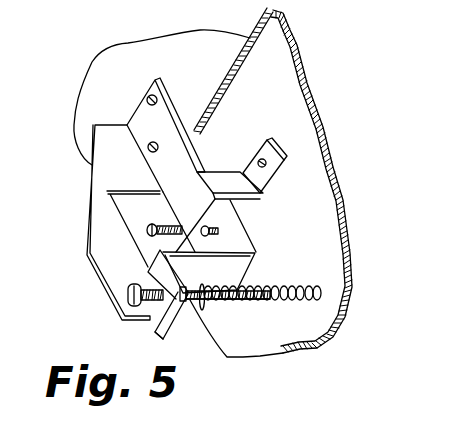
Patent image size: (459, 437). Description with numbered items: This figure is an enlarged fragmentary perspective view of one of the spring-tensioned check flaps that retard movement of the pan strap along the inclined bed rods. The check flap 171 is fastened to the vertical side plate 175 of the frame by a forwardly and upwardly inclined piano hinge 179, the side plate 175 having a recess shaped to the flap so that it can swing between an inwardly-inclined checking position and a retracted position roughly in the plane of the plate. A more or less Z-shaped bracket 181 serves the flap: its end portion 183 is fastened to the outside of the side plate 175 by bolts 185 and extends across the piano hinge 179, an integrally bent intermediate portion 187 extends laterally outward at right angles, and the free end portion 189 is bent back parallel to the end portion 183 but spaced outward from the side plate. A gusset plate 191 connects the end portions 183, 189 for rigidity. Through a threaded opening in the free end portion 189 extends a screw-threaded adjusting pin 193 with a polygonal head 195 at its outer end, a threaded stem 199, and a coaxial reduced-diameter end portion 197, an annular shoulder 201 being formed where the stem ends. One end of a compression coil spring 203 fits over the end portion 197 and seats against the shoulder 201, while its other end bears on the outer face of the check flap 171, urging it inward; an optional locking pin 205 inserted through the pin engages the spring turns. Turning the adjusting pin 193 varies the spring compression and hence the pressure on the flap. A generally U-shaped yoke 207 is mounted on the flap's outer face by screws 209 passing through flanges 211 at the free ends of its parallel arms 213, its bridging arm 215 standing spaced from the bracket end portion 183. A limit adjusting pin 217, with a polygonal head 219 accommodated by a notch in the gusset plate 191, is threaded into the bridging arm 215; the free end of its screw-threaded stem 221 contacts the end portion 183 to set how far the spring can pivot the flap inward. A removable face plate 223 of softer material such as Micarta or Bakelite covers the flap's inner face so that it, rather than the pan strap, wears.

The check flap 171 is at (403, 265).
The side plate 175 is at (128, 47).
The piano hinge 179 is at (246, 46).
The Z-shaped bracket 181 is at (140, 268).
The end portion 183 is at (168, 117).
The bolts 185 is at (152, 146).
The intermediate portion 187 is at (232, 253).
The free end portion 189 is at (155, 333).
The gusset plate 191 is at (100, 198).
The adjusting pin 193 is at (222, 280).
The polygonal head 195 is at (123, 297).
The reduced-diameter end portion 197 is at (268, 301).
The threaded stem 199 is at (194, 300).
The annular shoulder 201 is at (228, 289).
The compression coil spring 203 is at (318, 300).
The locking pin 205 is at (205, 303).
The U-shaped yoke 207 is at (320, 220).
The screws 209 is at (262, 158).
The flanges 211 is at (268, 176).
The parallel arms 213 is at (228, 174).
The bridging arm 215 is at (192, 190).
The limit adjusting pin 217 is at (167, 226).
The polygonal head 219 is at (147, 231).
The screw-threaded stem 221 is at (212, 229).
The face plate 223 is at (328, 128).